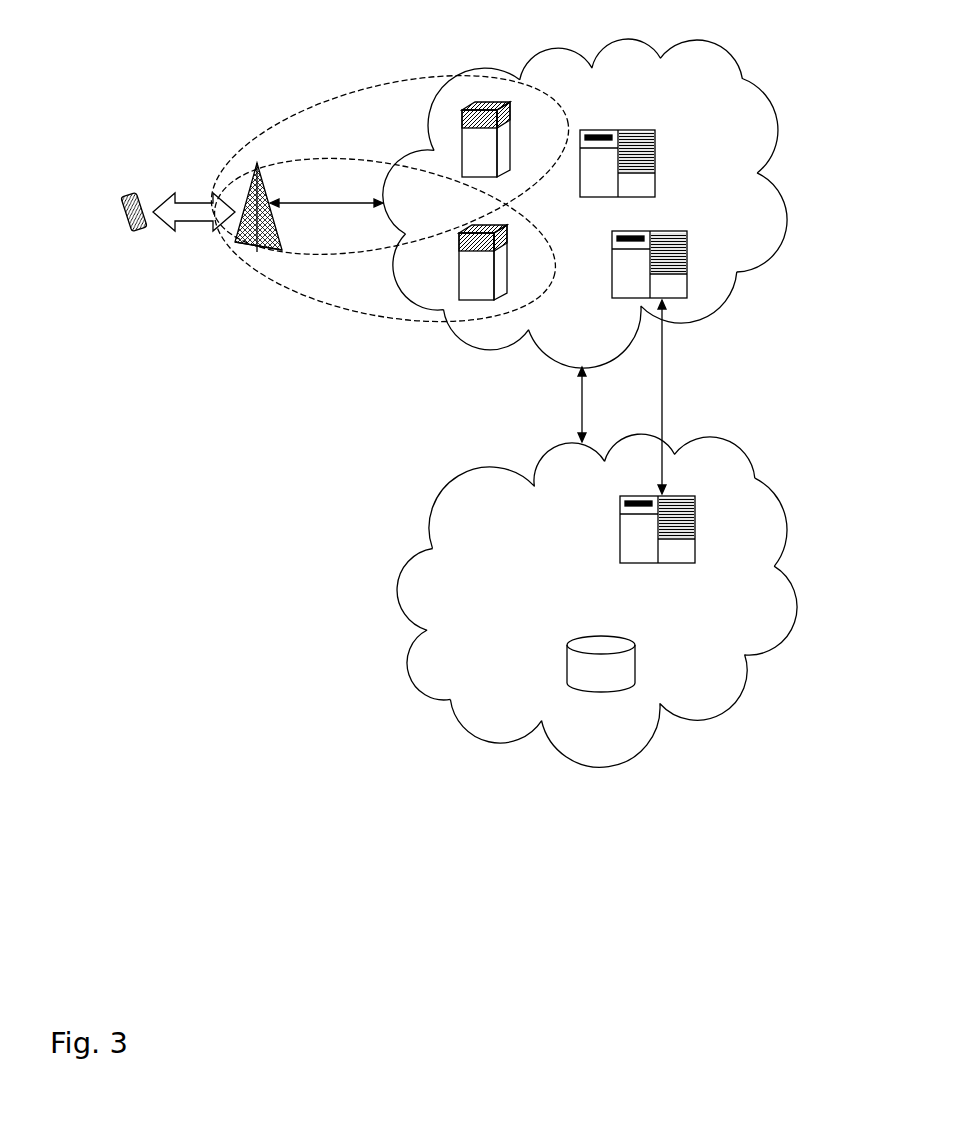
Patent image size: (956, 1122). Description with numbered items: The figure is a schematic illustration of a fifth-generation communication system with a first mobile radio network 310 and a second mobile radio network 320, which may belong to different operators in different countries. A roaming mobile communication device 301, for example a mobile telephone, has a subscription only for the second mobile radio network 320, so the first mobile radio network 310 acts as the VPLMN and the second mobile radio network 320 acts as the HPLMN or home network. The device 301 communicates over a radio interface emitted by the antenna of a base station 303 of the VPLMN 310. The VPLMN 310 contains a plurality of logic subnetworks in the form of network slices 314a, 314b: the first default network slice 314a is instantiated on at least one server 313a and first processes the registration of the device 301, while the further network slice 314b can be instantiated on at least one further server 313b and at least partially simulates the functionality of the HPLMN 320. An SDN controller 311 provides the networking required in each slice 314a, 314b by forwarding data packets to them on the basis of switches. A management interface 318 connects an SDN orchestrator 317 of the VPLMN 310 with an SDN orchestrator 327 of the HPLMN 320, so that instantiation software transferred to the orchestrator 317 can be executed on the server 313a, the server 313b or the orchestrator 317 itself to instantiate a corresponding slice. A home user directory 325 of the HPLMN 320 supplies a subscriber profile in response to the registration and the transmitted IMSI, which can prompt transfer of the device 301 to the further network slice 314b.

The roaming mobile communication device 301 is at (118, 198).
The base station 303 is at (244, 206).
The first mobile radio network 310 is at (737, 64).
The SDN controller 311 is at (657, 143).
The server 313a is at (563, 130).
The further server 313b is at (462, 300).
The first default network slice 314a is at (318, 118).
The further network slice 314b is at (330, 298).
The SDN orchestrator 317 is at (612, 251).
The management interface 318 is at (668, 392).
The second mobile radio network 320 is at (745, 453).
The home user directory 325 is at (566, 664).
The SDN orchestrator 327 is at (620, 527).